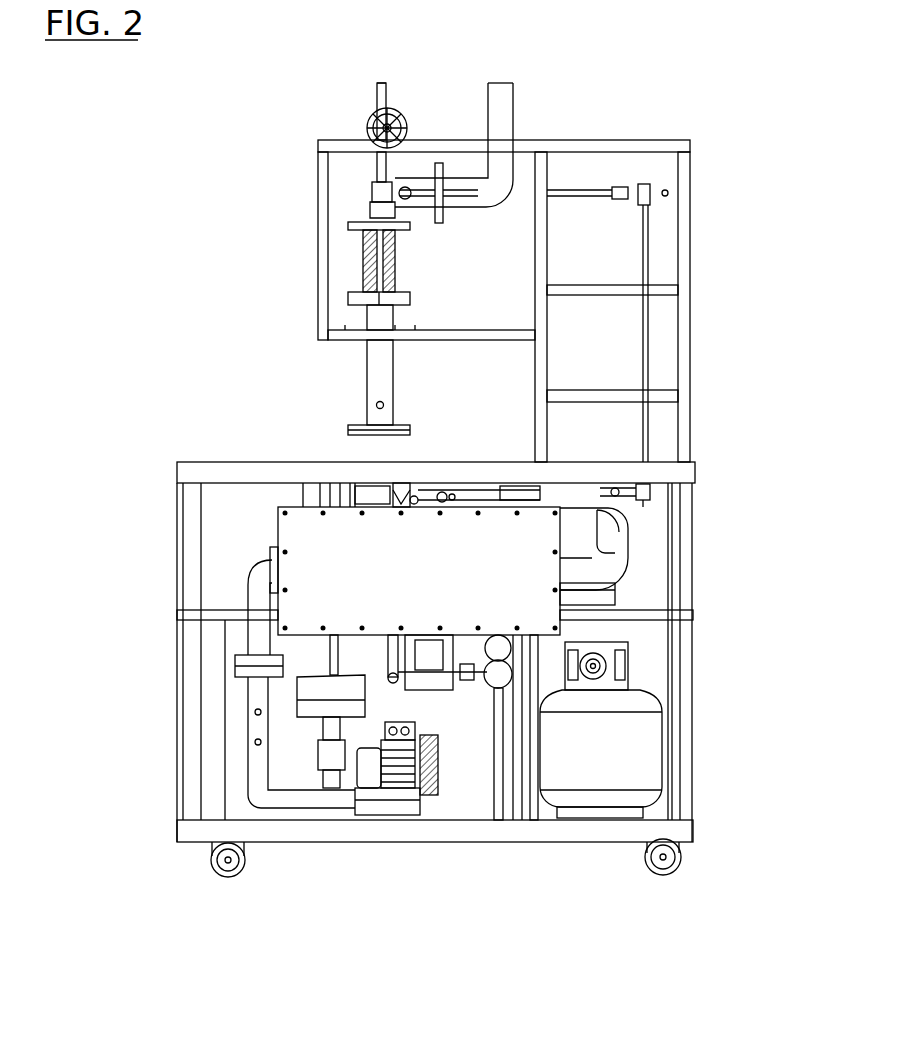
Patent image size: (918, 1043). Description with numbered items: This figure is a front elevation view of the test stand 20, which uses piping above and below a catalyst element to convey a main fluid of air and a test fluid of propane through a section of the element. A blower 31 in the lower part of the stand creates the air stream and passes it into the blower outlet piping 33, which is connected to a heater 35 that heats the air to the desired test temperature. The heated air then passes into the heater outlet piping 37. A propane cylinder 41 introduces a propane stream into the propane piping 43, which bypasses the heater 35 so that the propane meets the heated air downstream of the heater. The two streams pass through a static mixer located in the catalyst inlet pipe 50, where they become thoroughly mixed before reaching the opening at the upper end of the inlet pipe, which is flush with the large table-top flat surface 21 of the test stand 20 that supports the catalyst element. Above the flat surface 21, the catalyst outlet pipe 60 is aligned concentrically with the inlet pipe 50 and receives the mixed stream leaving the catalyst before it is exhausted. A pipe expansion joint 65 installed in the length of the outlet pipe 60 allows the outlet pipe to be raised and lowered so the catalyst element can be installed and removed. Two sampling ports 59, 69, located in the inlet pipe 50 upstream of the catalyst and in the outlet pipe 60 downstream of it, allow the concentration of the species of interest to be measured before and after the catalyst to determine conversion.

The test stand 20 is at (682, 360).
The flat surface 21 is at (193, 462).
The blower 31 is at (400, 820).
The blower outlet piping 33 is at (250, 695).
The heater 35 is at (573, 610).
The heater outlet piping 37 is at (630, 537).
The propane cylinder 41 is at (648, 772).
The propane piping 43 is at (478, 497).
The catalyst inlet pipe 50 is at (355, 483).
The port 59 is at (415, 500).
The catalyst outlet pipe 60 is at (393, 367).
The pipe expansion joint 65 is at (353, 428).
The port 69 is at (378, 403).